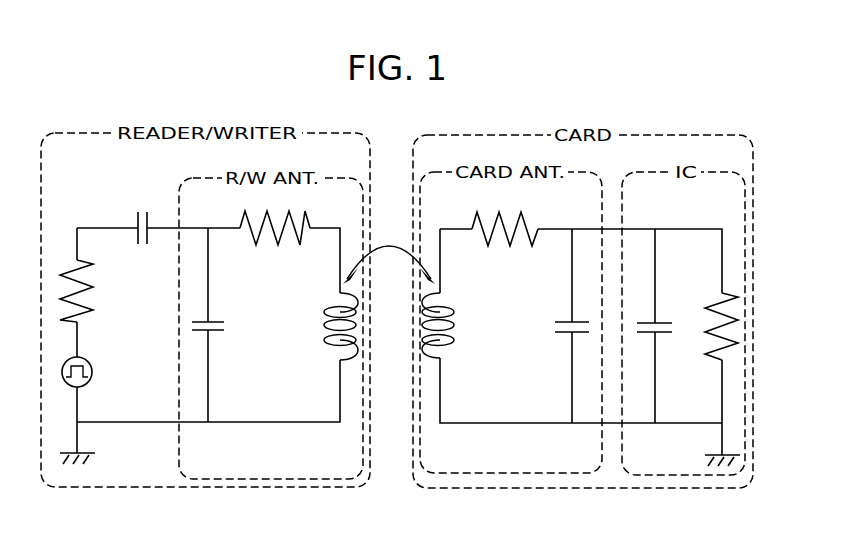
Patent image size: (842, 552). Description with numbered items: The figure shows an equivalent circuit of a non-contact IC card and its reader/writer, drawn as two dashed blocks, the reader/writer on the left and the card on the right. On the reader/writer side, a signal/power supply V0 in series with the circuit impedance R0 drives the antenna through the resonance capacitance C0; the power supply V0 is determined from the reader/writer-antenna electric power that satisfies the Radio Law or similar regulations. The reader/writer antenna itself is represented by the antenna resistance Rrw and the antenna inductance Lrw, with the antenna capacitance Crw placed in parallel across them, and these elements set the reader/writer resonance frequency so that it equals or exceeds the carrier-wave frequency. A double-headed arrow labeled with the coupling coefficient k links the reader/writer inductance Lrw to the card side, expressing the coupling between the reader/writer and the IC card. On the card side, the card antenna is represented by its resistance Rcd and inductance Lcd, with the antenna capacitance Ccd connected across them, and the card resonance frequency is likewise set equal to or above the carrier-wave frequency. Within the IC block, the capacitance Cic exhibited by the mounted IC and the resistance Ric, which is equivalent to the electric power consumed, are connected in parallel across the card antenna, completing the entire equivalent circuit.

The resonance capacitance C0 is at (139, 245).
The circuit impedance R0 is at (89, 291).
The power supply V0 is at (118, 388).
The resistance of R/W antenna Rrw is at (275, 243).
The capacitance of R/W antenna Crw is at (216, 340).
The inductance of R/W antenna Lrw is at (322, 326).
The coupling coefficient k is at (389, 255).
The resistance of card antenna Rcd is at (505, 245).
The inductance of card antenna Lcd is at (452, 325).
The capacitance of card antenna Ccd is at (559, 341).
The capacitance of IC Cic is at (659, 343).
The resistance of IC Ric is at (712, 318).